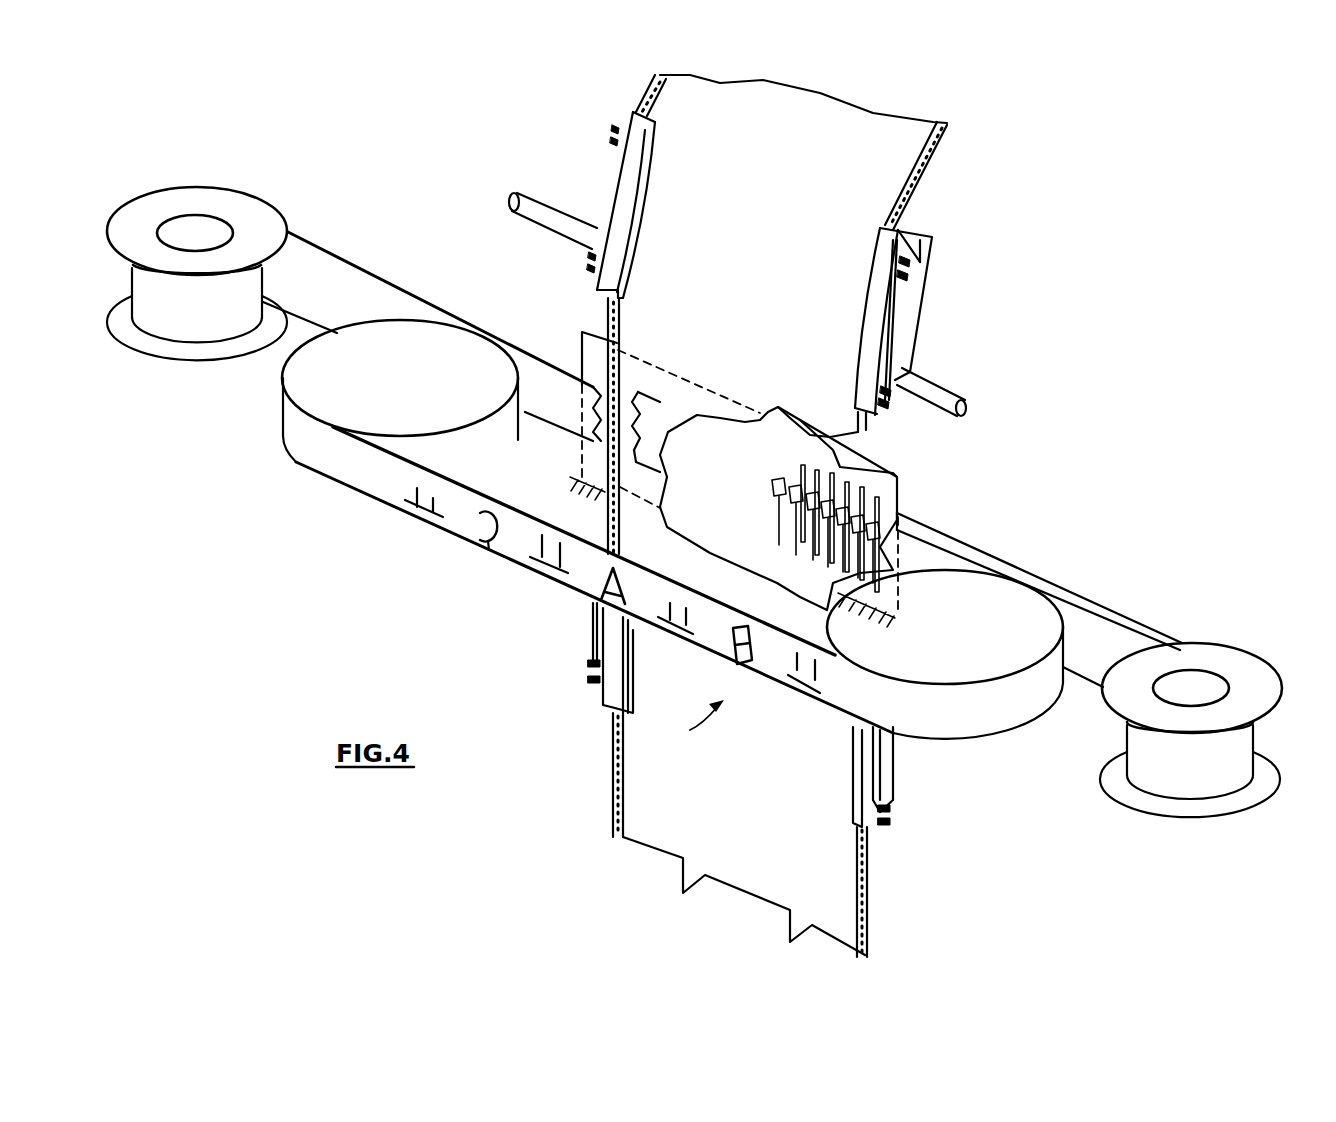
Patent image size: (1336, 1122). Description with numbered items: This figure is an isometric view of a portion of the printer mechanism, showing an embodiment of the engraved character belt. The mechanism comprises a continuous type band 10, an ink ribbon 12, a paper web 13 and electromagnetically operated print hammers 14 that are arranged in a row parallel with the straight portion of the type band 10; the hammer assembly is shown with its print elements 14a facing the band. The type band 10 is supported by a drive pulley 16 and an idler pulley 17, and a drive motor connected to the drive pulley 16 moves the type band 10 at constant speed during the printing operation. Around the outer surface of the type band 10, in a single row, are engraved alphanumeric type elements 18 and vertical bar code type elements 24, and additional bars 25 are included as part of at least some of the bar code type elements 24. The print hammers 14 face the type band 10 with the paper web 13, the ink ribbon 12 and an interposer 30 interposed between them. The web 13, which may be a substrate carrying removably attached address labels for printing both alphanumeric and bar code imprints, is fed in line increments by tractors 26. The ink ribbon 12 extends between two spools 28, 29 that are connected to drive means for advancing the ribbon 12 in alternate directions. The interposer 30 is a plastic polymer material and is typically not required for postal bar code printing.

The continuous type band 10 is at (370, 495).
The ink ribbon 12 is at (368, 282).
The paper web 13 is at (888, 175).
The print hammers 14 is at (977, 544).
The print wires 14a is at (887, 472).
The drive pulley 16 is at (1023, 600).
The idler pulley 17 is at (305, 383).
The alphanumeric type elements 18 is at (688, 724).
The vertical bar code type elements 24 is at (510, 553).
The additional bars 25 is at (418, 517).
The tractors 26 is at (628, 157).
The spool 28 is at (1240, 662).
The spool 29 is at (253, 207).
The interposer 30 is at (670, 373).